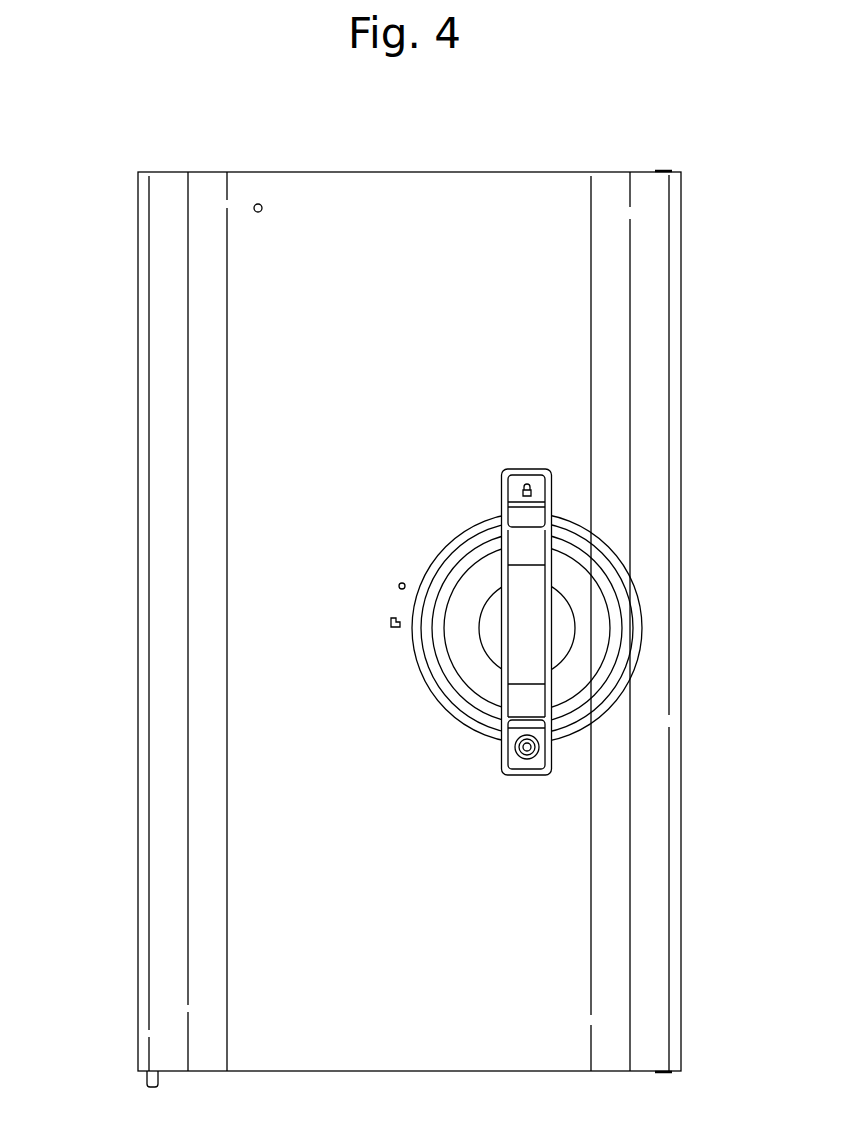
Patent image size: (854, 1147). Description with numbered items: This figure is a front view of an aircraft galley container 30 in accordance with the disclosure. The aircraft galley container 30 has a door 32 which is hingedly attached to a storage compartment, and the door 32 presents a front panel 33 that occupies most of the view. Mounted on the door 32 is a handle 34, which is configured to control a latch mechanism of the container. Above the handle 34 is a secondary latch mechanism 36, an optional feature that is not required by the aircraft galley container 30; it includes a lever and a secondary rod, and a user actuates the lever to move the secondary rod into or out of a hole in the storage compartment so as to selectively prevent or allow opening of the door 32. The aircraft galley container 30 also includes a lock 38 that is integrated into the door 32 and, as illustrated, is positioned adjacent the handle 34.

The aircraft galley container 30 is at (99, 197).
The door 32 is at (556, 936).
The front panel 33 is at (421, 940).
The handle 34 is at (530, 632).
The secondary latch mechanism 36 is at (536, 488).
The lock 38 is at (540, 739).